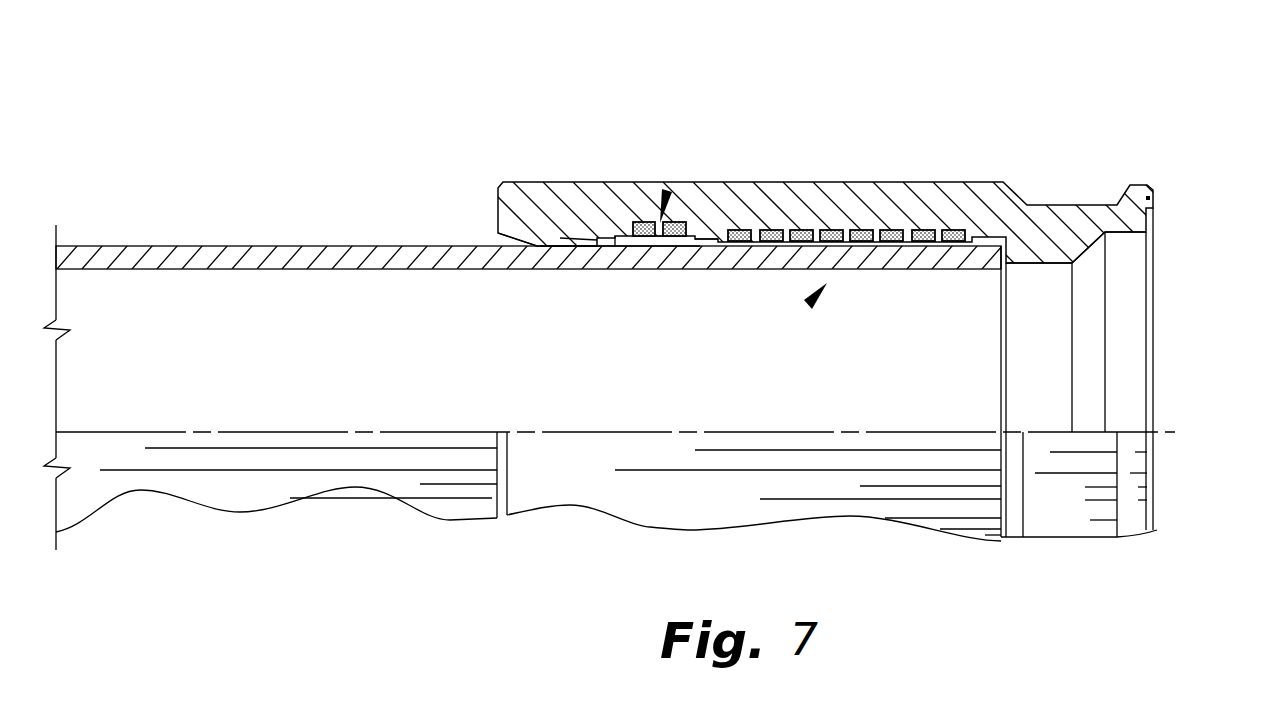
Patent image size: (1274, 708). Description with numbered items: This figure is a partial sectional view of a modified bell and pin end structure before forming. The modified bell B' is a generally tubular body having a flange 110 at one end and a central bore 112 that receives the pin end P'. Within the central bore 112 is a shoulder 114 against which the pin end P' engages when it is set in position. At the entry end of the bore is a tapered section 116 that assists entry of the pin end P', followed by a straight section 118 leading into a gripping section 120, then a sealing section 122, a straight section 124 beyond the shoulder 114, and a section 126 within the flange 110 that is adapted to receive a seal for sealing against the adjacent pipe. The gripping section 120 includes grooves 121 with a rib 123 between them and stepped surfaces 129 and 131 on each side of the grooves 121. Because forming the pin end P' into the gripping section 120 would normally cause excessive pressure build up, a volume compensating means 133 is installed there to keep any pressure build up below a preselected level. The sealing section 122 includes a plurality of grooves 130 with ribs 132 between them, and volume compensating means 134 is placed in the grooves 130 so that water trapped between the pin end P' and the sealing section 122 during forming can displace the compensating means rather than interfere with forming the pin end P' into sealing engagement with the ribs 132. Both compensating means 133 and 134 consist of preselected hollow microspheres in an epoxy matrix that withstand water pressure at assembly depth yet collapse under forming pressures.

The pin end P' is at (609, 376).
The modified bell B' is at (727, 148).
The flange 110 is at (1143, 182).
The central bore 112 is at (1053, 265).
The shoulder 114 is at (1001, 248).
The tapered section 116 is at (513, 243).
The straight section 118 is at (562, 246).
The gripping section 120 is at (668, 190).
The grooves 121 is at (643, 240).
The sealing section 122 is at (808, 298).
The rib 123 is at (661, 240).
The straight section 124 is at (1040, 270).
The section within flange 126 is at (1107, 232).
The stepped surface 129 is at (616, 242).
The grooves 130 is at (780, 231).
The stepped surface 131 is at (585, 238).
The ribs 132 is at (775, 241).
The volume compensating means 133 is at (640, 223).
The volume compensating means 134 is at (887, 232).